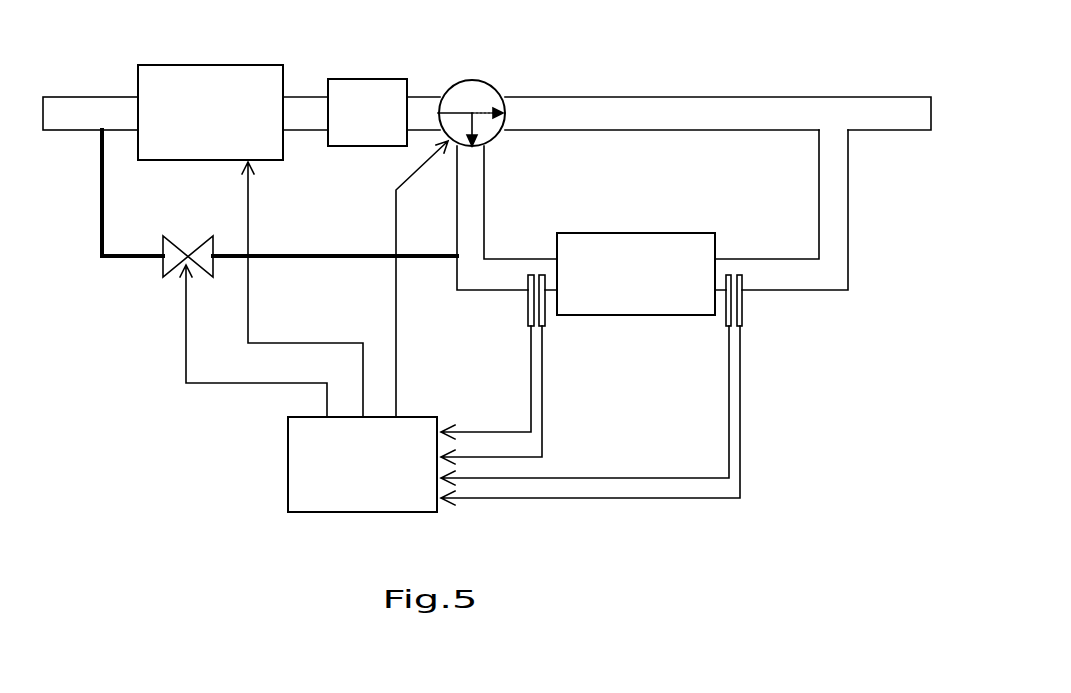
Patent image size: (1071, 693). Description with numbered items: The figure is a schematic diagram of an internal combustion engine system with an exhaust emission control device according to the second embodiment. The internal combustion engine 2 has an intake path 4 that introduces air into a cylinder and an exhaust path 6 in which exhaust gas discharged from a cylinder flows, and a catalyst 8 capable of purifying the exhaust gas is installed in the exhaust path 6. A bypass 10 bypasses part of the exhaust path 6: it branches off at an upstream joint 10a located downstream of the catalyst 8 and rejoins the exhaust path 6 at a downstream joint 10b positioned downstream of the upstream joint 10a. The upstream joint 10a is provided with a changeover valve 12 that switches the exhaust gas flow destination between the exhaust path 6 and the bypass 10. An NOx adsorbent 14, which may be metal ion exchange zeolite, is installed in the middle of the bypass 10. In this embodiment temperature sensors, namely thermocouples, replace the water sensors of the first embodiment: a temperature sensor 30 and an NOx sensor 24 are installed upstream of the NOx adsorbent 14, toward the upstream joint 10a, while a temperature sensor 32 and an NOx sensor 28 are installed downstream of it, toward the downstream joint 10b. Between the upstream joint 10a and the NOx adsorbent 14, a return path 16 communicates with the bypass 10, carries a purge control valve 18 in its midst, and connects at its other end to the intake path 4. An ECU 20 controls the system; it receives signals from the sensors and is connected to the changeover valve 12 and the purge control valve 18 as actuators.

The internal combustion engine 2 is at (218, 65).
The intake path 4 is at (82, 97).
The exhaust path 6 is at (643, 97).
The catalyst 8 is at (363, 79).
The bypass 10 is at (848, 212).
The upstream joint 10a is at (472, 153).
The downstream joint 10b is at (837, 130).
The changeover valve 12 is at (467, 80).
The NOx adsorbent 14 is at (638, 233).
The return path 16 is at (340, 252).
The purge control valve 18 is at (198, 242).
The ECU 20 is at (288, 470).
The NOx sensor 24 is at (545, 302).
The NOx sensor 28 is at (742, 302).
The temperature sensor 30 is at (528, 302).
The temperature sensor 32 is at (726, 315).